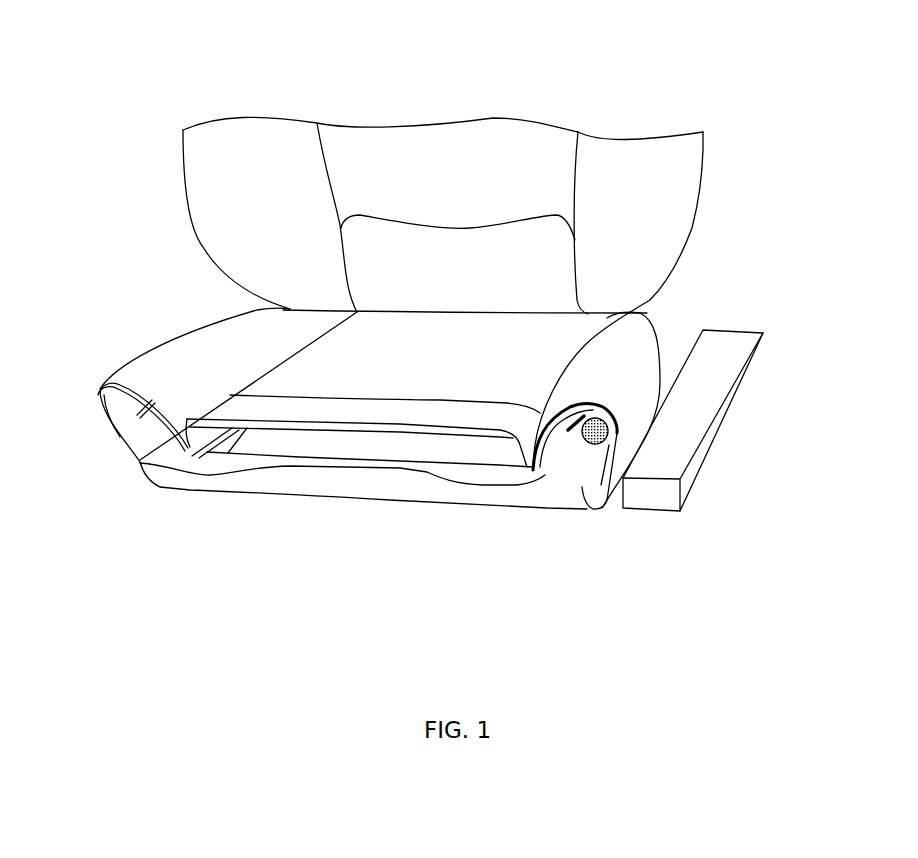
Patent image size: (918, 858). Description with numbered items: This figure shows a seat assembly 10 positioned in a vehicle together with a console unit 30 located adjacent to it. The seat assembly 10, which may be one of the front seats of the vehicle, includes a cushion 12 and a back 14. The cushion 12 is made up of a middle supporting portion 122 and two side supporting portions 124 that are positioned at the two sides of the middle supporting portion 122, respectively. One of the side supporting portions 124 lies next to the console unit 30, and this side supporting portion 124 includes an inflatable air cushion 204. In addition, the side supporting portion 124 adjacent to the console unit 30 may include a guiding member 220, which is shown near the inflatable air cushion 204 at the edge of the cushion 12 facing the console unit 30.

The seat assembly 10 is at (700, 216).
The cushion 12 is at (522, 340).
The back 14 is at (445, 142).
The console unit 30 is at (732, 425).
The middle supporting portion 122 is at (307, 367).
The side supporting portion 124 is at (607, 337).
The inflatable air cushion 204 is at (587, 440).
The guiding member 220 is at (597, 467).